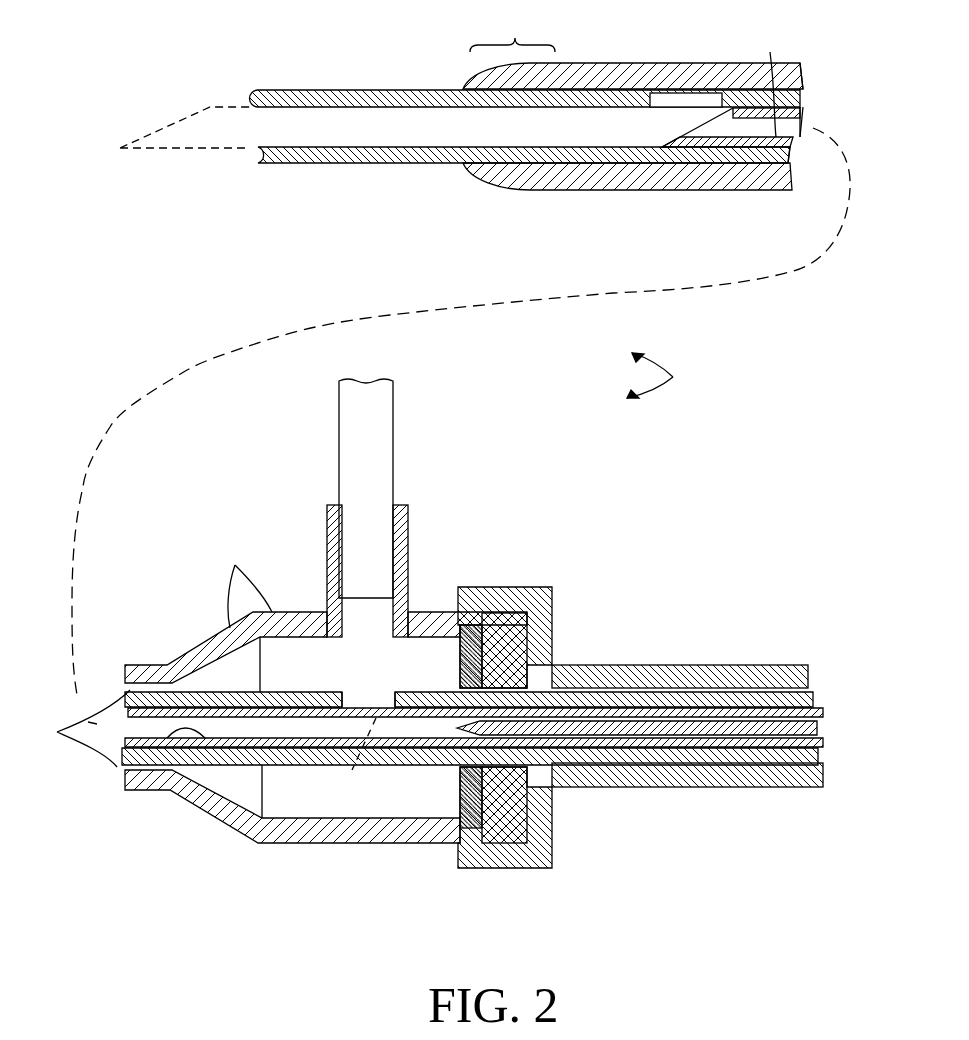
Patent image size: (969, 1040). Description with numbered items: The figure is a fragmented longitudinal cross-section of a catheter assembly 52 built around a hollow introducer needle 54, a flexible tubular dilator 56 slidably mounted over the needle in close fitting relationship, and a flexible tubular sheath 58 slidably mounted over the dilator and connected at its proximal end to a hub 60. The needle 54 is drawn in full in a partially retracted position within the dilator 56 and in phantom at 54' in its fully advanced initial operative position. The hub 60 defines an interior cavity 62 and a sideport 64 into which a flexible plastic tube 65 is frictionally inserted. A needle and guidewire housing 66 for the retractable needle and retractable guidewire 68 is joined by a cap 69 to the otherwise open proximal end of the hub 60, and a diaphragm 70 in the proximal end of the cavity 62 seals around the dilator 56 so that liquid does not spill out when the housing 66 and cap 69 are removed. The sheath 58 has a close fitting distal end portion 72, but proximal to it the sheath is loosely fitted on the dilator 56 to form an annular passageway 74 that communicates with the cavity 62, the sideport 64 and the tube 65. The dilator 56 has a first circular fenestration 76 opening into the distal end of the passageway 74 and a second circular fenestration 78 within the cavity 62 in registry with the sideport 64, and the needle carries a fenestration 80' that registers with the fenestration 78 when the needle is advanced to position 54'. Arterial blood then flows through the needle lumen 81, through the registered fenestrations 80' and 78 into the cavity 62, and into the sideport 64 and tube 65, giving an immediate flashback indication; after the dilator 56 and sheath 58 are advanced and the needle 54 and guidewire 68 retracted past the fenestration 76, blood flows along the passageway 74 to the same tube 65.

The catheter assembly 52 is at (666, 375).
The hollow introducer needle 54 is at (474, 457).
The needle in fully advanced initial operative position 54' is at (185, 162).
The flexible tubular dilator 56 is at (322, 157).
The flexible tubular sheath 58 is at (558, 185).
The hub 60 is at (244, 582).
The interior chamber or cavity 62 is at (309, 674).
The sideport 64 is at (408, 540).
The flexible plastic tube 65 is at (395, 445).
The needle and guidewire housing 66 is at (648, 665).
The retractable guidewire 68 is at (457, 728).
The cap 69 is at (553, 825).
The diaphragm 70 is at (485, 668).
The distal end portion 72 is at (512, 31).
The passageway 74 is at (788, 165).
The first circular fenestration 76 is at (650, 98).
The second circular fenestration 78 is at (343, 700).
The needle fenestration 80' is at (355, 759).
The lumen 81 is at (120, 813).